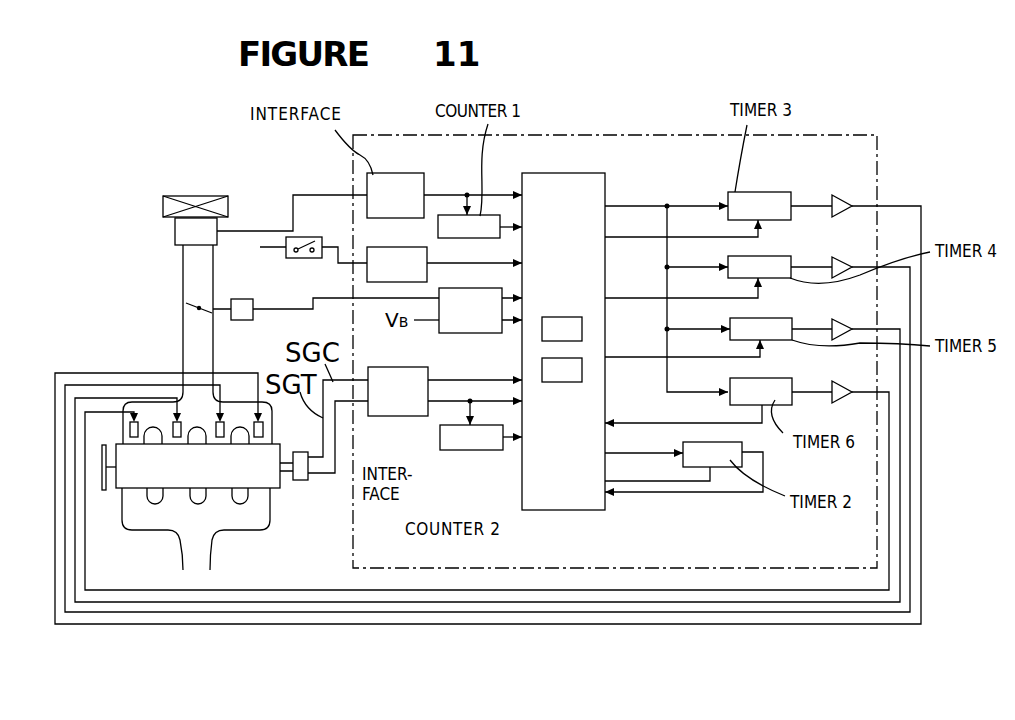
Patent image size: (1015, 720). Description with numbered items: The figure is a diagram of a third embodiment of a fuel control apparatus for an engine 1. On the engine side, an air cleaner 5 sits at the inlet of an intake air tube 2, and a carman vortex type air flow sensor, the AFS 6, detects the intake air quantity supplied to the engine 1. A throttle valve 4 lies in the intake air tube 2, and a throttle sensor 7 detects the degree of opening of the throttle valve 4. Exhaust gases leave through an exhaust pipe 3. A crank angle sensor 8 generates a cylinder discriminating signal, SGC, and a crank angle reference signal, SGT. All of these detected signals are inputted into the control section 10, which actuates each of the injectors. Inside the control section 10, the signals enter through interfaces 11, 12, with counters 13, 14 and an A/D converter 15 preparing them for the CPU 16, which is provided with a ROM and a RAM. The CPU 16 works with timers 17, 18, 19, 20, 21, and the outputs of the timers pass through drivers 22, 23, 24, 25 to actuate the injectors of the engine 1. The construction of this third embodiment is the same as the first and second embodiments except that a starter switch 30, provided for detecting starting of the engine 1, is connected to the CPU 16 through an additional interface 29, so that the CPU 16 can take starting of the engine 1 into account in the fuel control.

The engine 1 is at (128, 475).
The intake air tube 2 is at (247, 402).
The exhaust pipe 3 is at (259, 530).
The throttle valve 4 is at (183, 309).
The air cleaner 5 is at (203, 196).
The carman vortex type air flow sensor 6 is at (175, 232).
The throttle sensor 7 is at (237, 320).
The crank angle sensor 8 is at (300, 480).
The control section 10 is at (630, 135).
The interface 11 is at (398, 172).
The interface 12 is at (412, 408).
The counter 13 is at (450, 215).
The counter 14 is at (455, 450).
The A/D converter 15 is at (452, 333).
The CPU 16 is at (555, 510).
The timer 17 is at (752, 192).
The timer 18 is at (755, 256).
The timer 19 is at (756, 318).
The timer 20 is at (750, 378).
The timer 21 is at (722, 467).
The driver 22 is at (845, 194).
The driver 23 is at (848, 250).
The driver 24 is at (848, 312).
The driver 25 is at (848, 374).
The interface 29 is at (421, 247).
The starter switch 30 is at (292, 258).